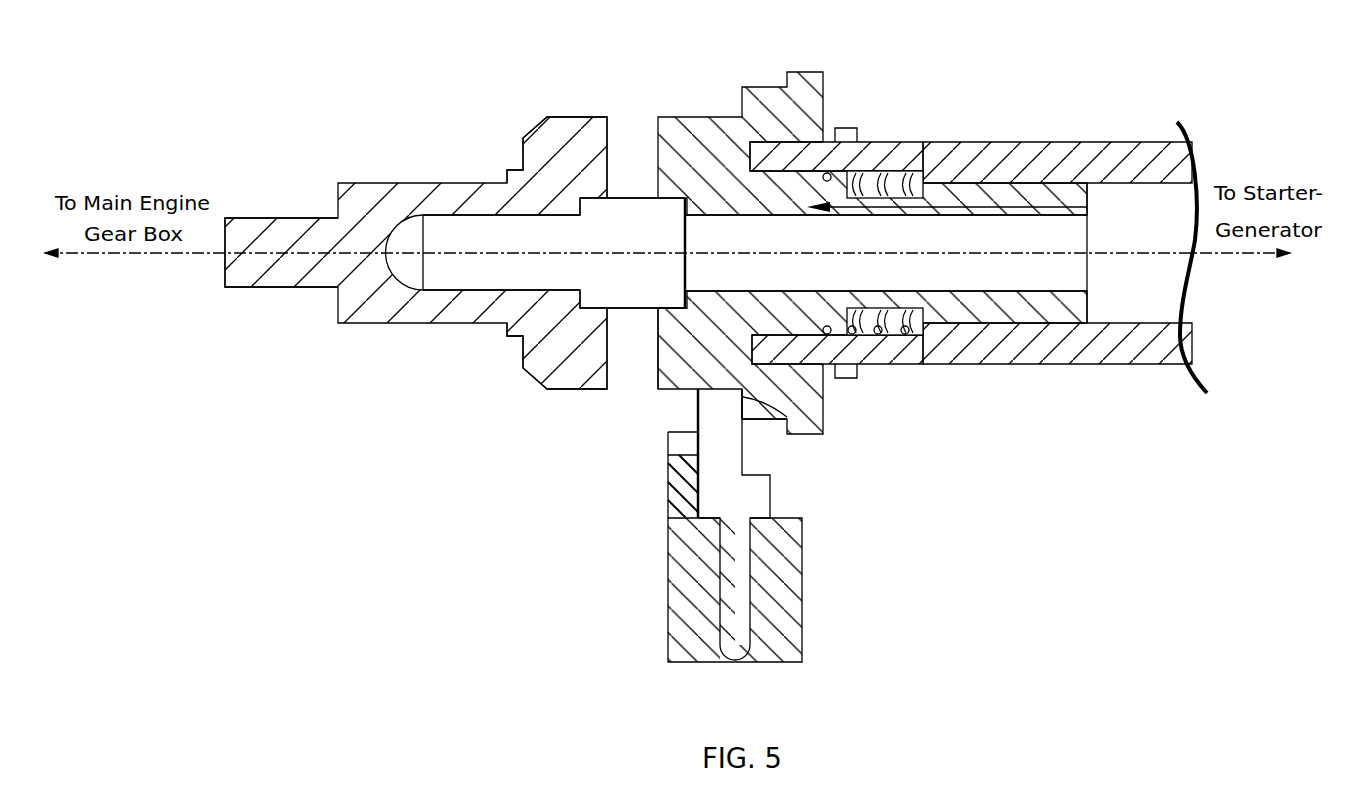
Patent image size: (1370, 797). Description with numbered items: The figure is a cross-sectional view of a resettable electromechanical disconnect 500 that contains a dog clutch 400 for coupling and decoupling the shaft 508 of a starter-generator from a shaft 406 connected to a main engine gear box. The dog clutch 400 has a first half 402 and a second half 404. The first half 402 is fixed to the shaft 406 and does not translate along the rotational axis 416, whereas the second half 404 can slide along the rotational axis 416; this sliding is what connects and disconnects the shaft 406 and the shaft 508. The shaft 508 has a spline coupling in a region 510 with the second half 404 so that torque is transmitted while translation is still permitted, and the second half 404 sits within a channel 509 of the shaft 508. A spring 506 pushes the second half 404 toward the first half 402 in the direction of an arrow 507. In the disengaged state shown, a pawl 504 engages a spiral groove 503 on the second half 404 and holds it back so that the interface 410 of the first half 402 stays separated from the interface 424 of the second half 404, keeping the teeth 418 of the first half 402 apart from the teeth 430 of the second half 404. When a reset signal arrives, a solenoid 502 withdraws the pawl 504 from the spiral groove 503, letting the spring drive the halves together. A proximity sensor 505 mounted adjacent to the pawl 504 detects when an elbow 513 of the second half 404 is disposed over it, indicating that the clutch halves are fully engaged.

The dog clutch 400 is at (557, 78).
The first half of dog clutch 402 is at (410, 183).
The second half of dog clutch 404 is at (670, 115).
The shaft 406 is at (302, 288).
The interface of first half 410 is at (617, 130).
The rotational axis 416 is at (677, 250).
The teeth of first half 418 is at (600, 163).
The interface of second half 424 is at (643, 348).
The teeth of second half 430 is at (667, 317).
The resettable electromechanical disconnect 500 is at (455, 480).
The solenoid 502 is at (803, 620).
The spiral groove 503 is at (790, 432).
The pawl 504 is at (752, 506).
The proximity sensor 505 is at (682, 442).
The spring 506 is at (890, 160).
The arrow 507 is at (910, 180).
The shaft 508 is at (1030, 142).
The channel 509 is at (1125, 195).
The region 510 is at (913, 343).
The elbow 513 is at (743, 397).